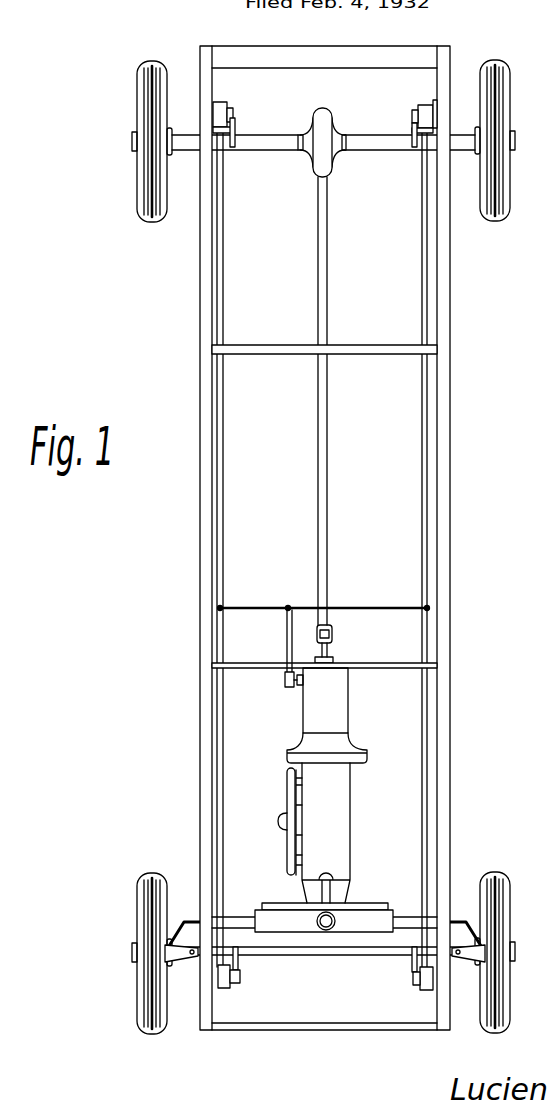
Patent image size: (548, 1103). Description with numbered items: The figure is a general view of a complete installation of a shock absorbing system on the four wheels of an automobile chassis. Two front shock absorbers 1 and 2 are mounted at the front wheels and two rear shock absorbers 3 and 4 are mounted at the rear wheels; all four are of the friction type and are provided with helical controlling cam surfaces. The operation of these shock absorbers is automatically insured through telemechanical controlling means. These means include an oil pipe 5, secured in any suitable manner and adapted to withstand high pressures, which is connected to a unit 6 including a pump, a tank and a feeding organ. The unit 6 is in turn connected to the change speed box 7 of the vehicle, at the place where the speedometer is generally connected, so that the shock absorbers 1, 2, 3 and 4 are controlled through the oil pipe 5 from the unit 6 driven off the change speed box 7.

The front shock absorber 1 is at (225, 975).
The front shock absorber 2 is at (427, 977).
The rear shock absorber 3 is at (220, 113).
The rear shock absorber 4 is at (425, 113).
The oil pipe 5 is at (257, 605).
The unit 6 is at (285, 680).
The change speed box 7 is at (315, 717).